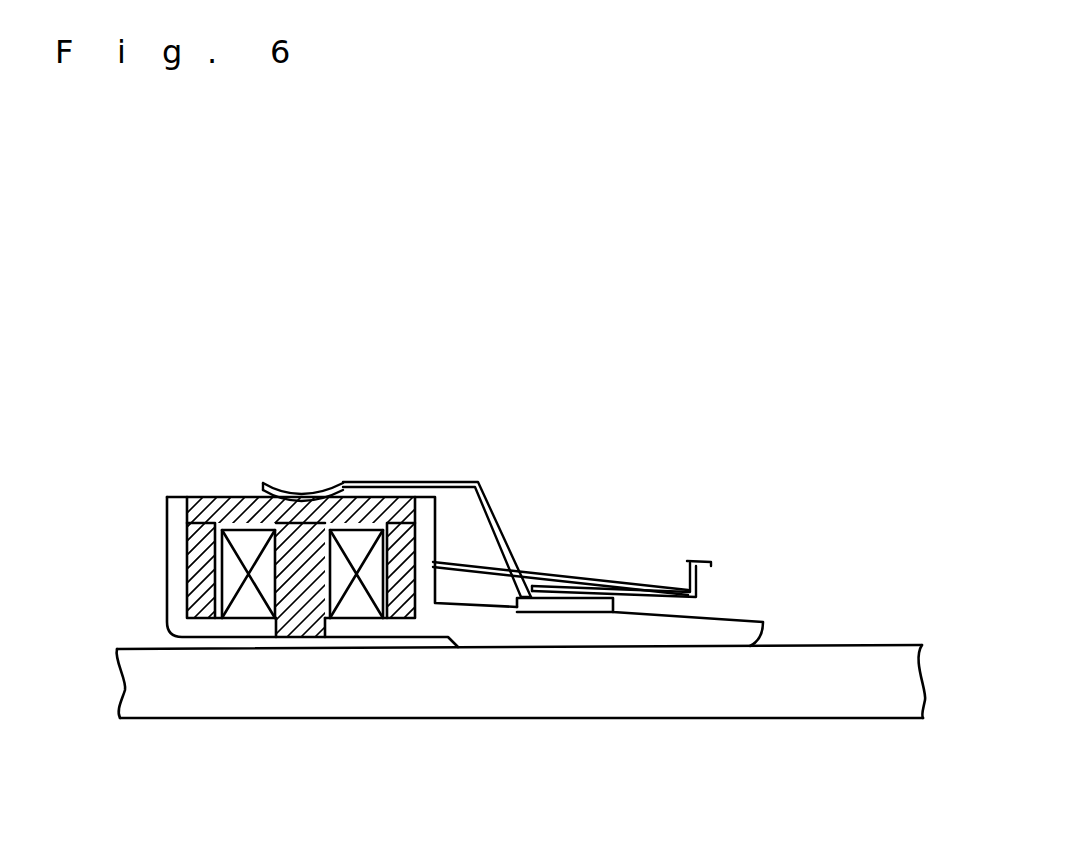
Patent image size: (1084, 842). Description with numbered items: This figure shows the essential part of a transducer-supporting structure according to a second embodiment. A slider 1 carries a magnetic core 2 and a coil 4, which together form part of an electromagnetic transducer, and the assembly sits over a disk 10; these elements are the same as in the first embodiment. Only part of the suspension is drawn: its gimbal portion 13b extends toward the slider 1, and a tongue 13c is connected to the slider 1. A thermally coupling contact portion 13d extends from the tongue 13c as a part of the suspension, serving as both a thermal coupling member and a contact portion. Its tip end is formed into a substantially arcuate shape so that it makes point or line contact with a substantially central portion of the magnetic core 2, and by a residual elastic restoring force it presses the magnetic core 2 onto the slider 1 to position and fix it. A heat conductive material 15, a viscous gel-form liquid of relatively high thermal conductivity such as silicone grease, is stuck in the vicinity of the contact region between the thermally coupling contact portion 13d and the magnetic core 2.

The slider 1 is at (727, 613).
The magnetic core 2 is at (218, 497).
The coil 4 is at (358, 542).
The disk 10 is at (423, 718).
The gimbal portion 13b is at (547, 570).
The tongue 13c is at (607, 583).
The thermally coupling contact portion 13d is at (437, 480).
The heat conductive material 15 is at (263, 490).